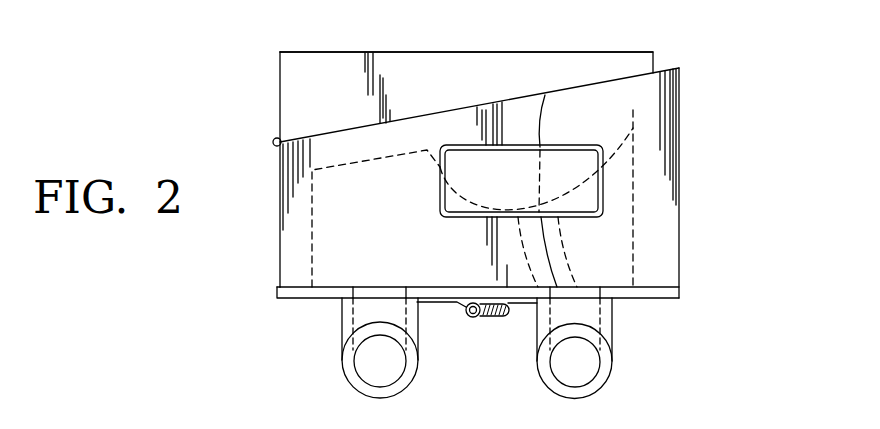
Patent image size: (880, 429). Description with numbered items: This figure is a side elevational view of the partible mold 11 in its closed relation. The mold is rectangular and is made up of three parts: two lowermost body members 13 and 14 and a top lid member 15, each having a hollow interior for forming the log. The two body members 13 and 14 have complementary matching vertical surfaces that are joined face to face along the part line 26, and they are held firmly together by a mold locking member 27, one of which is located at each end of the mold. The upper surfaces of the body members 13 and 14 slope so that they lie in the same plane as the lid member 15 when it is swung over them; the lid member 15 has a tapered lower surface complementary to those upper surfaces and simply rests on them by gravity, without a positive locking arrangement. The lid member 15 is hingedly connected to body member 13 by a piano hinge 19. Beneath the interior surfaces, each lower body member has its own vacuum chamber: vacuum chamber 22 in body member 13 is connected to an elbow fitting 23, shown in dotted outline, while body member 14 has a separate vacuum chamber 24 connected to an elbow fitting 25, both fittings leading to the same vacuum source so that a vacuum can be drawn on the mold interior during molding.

The partible mold 11 is at (680, 110).
The lowermost body member 13 is at (280, 245).
The lowermost body member 14 is at (681, 208).
The lid member 15 is at (473, 52).
The piano hinge 19 is at (478, 318).
The vacuum chamber 22 is at (312, 200).
The elbow fitting 23 is at (402, 392).
The vacuum chamber 24 is at (633, 222).
The elbow fitting 25 is at (610, 385).
The part line 26 is at (546, 125).
The mold locking member 27 is at (516, 183).